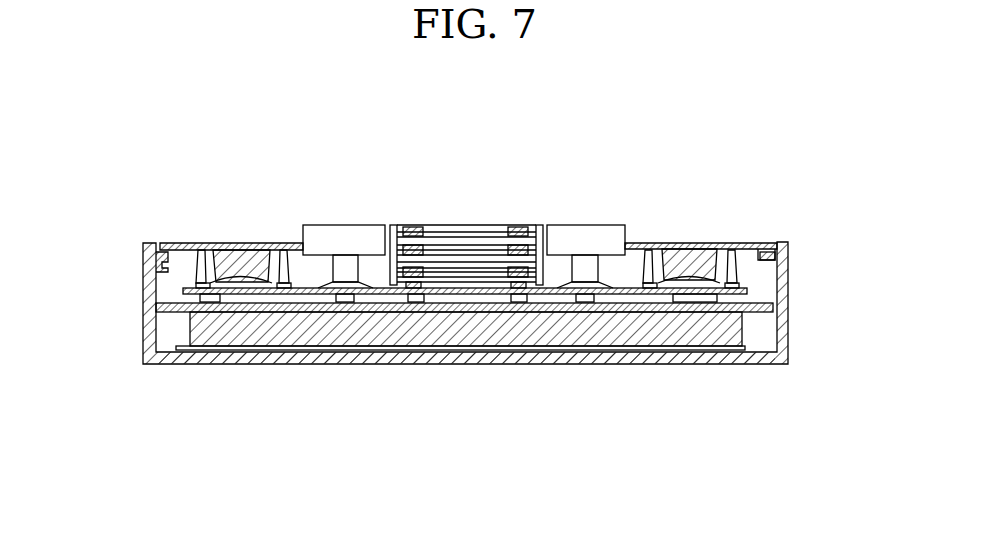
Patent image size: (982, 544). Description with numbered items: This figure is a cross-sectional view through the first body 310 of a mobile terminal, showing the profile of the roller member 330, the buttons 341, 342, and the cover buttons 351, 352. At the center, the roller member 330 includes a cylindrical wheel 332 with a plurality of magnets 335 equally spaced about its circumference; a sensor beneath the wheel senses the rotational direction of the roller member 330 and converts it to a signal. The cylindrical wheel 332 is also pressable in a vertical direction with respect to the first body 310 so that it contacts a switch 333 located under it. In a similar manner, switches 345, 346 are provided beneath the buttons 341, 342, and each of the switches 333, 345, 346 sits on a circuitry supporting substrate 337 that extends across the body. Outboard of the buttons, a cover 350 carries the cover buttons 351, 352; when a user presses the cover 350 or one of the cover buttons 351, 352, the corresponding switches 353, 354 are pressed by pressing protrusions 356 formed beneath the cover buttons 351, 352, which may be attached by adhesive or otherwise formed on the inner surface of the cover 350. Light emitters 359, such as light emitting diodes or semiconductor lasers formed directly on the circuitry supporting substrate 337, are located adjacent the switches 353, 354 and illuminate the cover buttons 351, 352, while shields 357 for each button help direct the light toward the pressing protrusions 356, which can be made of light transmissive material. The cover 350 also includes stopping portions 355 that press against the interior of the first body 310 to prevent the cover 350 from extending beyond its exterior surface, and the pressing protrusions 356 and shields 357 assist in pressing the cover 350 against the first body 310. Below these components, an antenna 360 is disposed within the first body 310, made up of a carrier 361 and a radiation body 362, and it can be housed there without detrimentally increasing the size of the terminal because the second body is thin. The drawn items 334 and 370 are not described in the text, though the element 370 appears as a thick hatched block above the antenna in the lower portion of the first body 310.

The first body 310 is at (143, 318).
The roller member 330 is at (465, 277).
The cylindrical wheel 332 is at (538, 240).
The switch 333 is at (467, 283).
The lower left electrode 334 is at (410, 290).
The magnets 335 is at (408, 250).
The circuitry supporting substrate 337 is at (527, 289).
The button 341 is at (339, 236).
The button 342 is at (596, 236).
The switch 345 is at (338, 289).
The switch 346 is at (580, 289).
The cover 350 is at (187, 243).
The cover button 351 is at (238, 243).
The cover button 352 is at (688, 245).
The switch 353 is at (232, 284).
The switch 354 is at (715, 283).
The stopping portions 355 is at (166, 274).
The pressing protrusions 356 is at (725, 242).
The shields 357 is at (735, 261).
The light emitters 359 is at (720, 290).
The antenna 360 is at (460, 413).
The carrier 361 is at (661, 347).
The radiation body 362 is at (698, 366).
The base block 370 is at (758, 312).